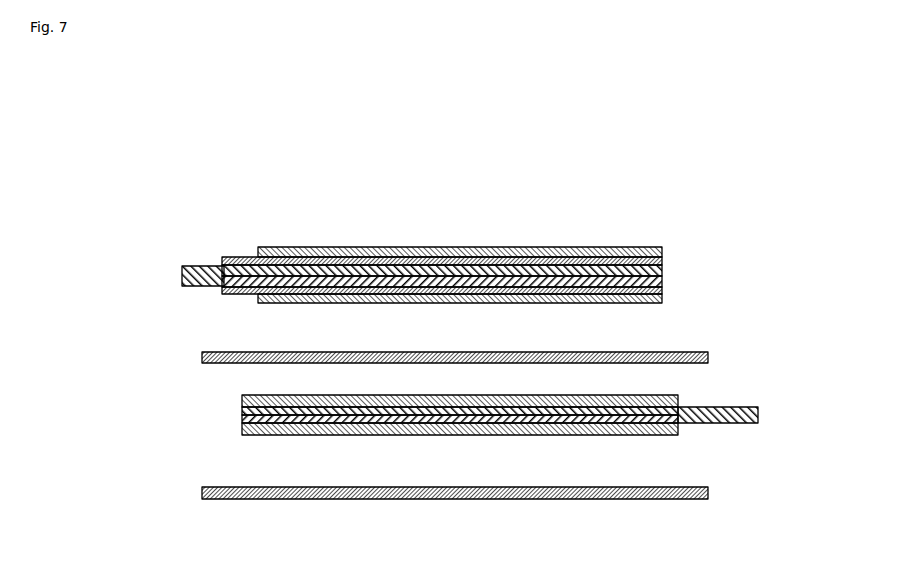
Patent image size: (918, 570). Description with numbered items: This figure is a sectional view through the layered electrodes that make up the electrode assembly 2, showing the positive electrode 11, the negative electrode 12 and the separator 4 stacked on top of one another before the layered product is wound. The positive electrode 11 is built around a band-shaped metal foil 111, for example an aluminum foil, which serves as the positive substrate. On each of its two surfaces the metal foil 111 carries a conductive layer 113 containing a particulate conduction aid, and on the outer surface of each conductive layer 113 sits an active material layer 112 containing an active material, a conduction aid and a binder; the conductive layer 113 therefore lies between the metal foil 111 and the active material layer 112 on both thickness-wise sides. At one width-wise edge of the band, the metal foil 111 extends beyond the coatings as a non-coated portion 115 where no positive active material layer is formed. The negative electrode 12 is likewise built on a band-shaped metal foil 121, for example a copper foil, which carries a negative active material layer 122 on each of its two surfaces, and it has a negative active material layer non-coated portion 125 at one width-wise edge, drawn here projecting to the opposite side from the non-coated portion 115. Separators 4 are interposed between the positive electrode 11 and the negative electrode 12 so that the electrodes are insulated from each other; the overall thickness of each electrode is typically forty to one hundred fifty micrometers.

The electrode assembly 2 is at (126, 136).
The positive electrode 11 is at (773, 228).
The metal foil 111 is at (662, 276).
The active material layer 112 is at (662, 248).
The conductive layer 113 is at (662, 260).
The non-coated portion 115 is at (198, 258).
The separator 4 is at (202, 356).
The negative electrode 12 is at (120, 388).
The metal foil 121 is at (242, 410).
The negative active material layer 122 is at (242, 397).
The negative active material layer non-coated portion 125 is at (718, 425).